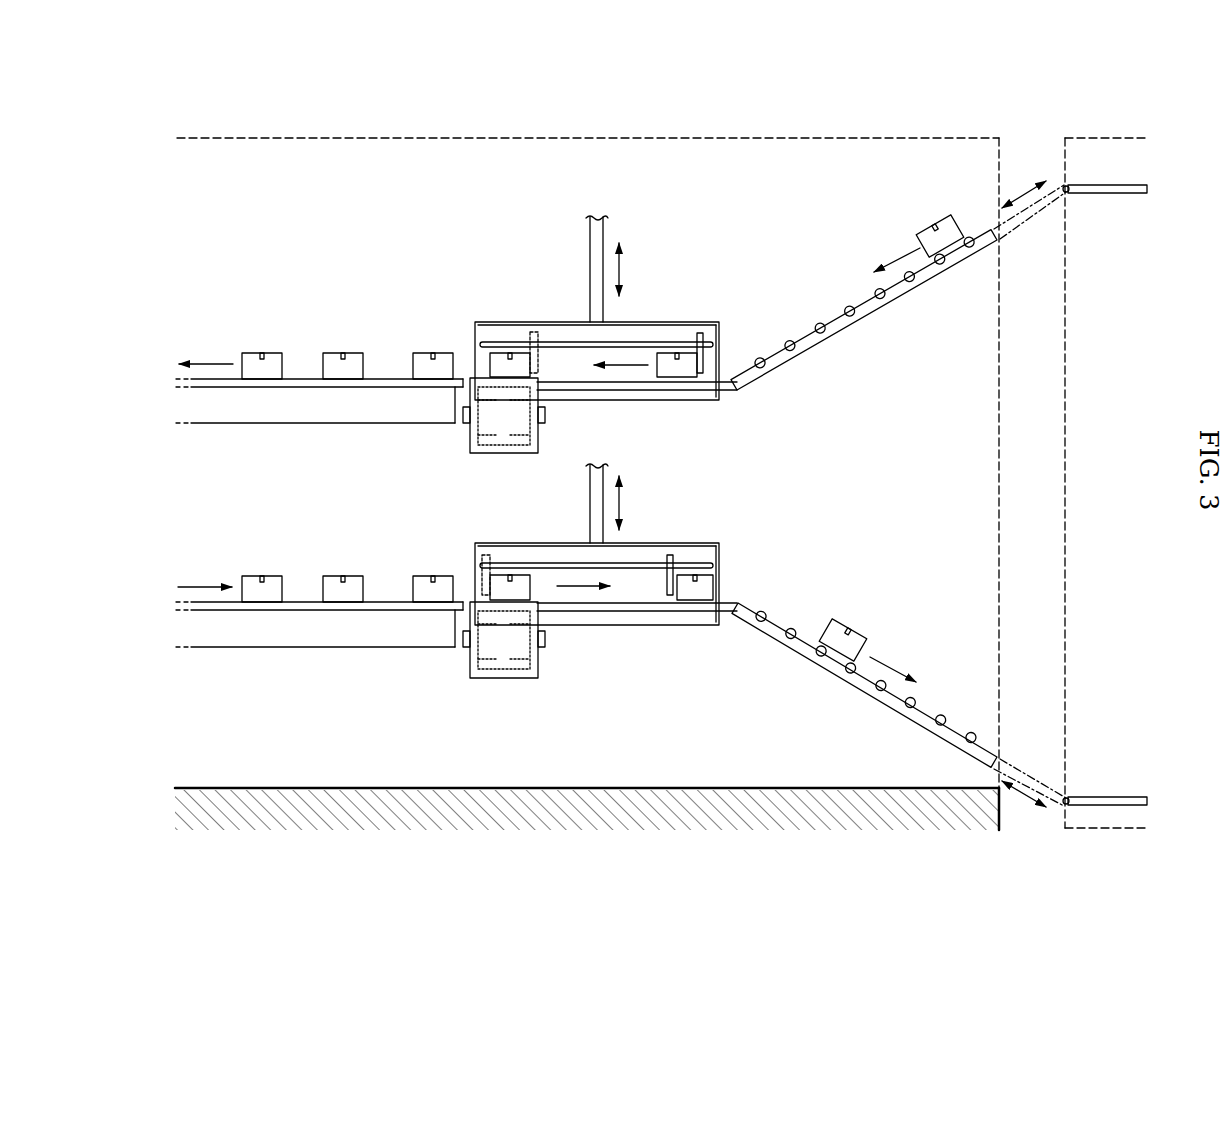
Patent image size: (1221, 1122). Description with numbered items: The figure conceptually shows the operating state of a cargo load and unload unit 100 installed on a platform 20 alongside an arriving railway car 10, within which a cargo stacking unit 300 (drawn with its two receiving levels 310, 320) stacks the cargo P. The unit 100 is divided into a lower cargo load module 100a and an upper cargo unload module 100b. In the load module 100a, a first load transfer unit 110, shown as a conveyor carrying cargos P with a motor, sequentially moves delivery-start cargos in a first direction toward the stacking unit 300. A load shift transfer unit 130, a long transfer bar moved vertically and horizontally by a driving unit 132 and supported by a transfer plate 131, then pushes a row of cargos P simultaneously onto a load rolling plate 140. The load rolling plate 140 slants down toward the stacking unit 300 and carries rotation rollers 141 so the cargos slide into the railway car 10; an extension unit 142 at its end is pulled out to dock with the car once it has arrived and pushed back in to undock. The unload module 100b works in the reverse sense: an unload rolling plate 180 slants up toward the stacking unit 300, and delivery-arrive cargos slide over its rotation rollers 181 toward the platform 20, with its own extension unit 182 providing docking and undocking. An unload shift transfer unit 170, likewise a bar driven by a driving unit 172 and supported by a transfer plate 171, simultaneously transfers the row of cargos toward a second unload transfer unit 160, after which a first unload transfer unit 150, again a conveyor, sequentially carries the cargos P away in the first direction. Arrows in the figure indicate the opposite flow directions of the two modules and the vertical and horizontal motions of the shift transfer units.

The cargo load and unload unit 100 is at (702, 138).
The railway car 10 is at (1112, 138).
The cargo load module 100a is at (190, 526).
The cargo unload module 100b is at (190, 258).
The first load transfer unit 110 is at (305, 602).
The cargo P is at (353, 355).
The load shift transfer unit 130 is at (670, 555).
The transfer plate 131 is at (672, 612).
The driving unit 132 is at (515, 543).
The load rolling plate 140 is at (864, 668).
The rotation rollers 141 is at (793, 638).
The extension unit 142 is at (1017, 768).
The first unload transfer unit 150 is at (305, 379).
The second unload transfer unit 160 is at (468, 446).
The unload shift transfer unit 170 is at (700, 334).
The transfer plate 171 is at (672, 391).
The driving unit 172 is at (515, 322).
The unload rolling plate 180 is at (864, 302).
The rotation rollers 181 is at (815, 325).
The extension unit 182 is at (1020, 212).
The platform 20 is at (708, 788).
The cargo stacking unit 300 is at (1118, 495).
The lower receiving conveyor 310 is at (1110, 797).
The upper receiving conveyor 320 is at (1110, 194).